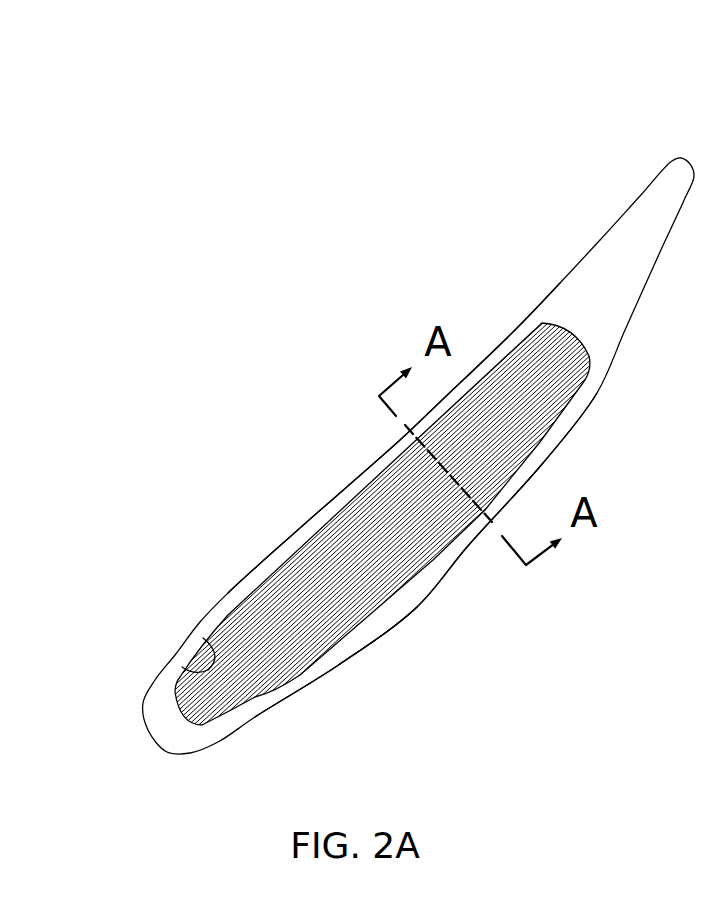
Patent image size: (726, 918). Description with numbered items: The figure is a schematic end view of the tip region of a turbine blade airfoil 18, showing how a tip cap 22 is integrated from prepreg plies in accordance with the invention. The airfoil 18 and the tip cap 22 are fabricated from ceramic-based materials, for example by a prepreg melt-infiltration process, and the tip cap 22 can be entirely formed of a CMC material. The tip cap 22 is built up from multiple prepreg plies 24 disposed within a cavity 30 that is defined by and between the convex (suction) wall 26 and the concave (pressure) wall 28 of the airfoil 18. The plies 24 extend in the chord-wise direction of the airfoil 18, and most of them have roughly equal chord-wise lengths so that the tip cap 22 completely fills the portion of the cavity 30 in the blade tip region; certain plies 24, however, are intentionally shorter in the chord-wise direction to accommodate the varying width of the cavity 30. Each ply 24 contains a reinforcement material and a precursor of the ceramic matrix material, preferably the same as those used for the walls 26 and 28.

The airfoil 18 is at (395, 122).
The tip cap 22 is at (345, 669).
The prepreg plies 24 is at (263, 613).
The convex (suction) wall 26 is at (417, 607).
The concave (pressure) wall 28 is at (347, 488).
The cavity 30 is at (203, 638).